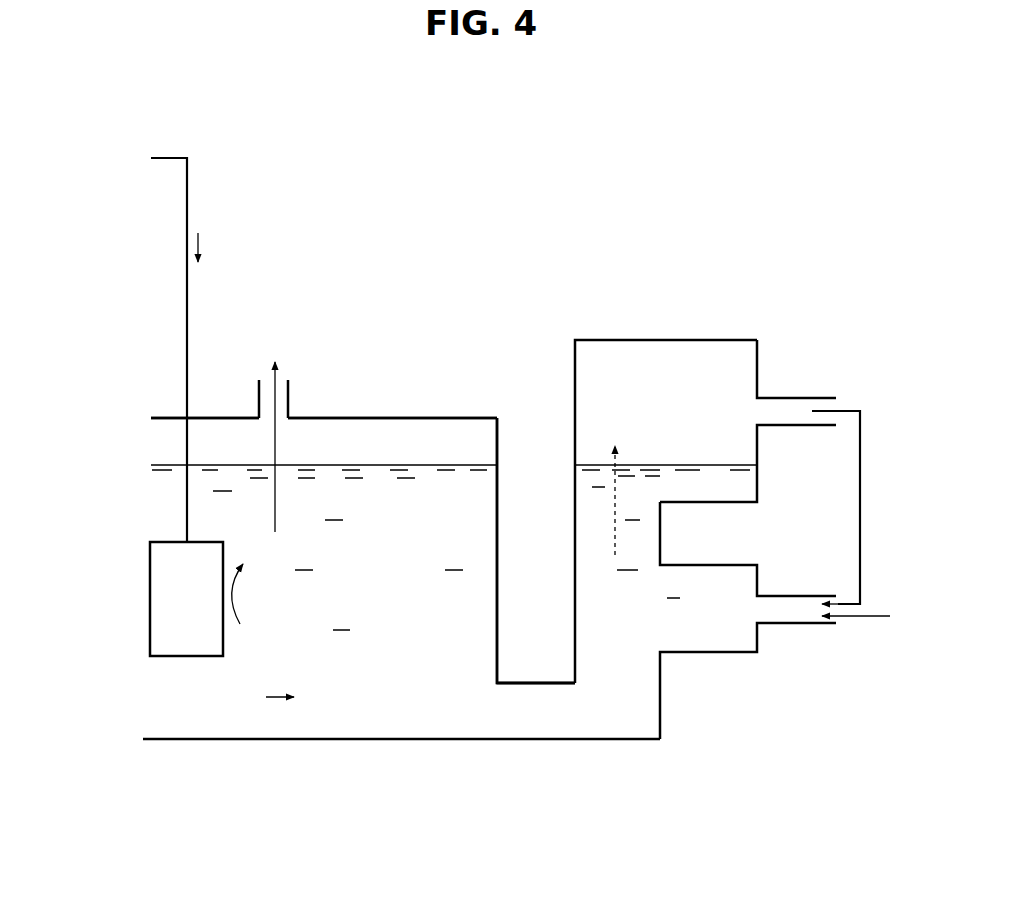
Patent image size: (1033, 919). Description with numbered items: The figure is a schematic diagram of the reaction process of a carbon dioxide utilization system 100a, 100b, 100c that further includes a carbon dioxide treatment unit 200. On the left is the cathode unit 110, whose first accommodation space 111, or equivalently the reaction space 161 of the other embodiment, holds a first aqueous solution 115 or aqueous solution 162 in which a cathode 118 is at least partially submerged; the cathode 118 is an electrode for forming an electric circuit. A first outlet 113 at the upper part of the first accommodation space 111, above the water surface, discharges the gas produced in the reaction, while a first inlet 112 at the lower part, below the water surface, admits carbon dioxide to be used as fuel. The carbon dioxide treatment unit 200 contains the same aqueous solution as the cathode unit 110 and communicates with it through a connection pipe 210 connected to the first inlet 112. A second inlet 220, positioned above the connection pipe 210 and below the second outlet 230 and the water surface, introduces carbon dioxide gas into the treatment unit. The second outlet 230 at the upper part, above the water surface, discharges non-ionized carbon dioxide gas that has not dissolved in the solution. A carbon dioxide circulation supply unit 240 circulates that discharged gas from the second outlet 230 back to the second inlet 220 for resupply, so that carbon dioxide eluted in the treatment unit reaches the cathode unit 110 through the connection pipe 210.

The carbon dioxide utilization system 100a is at (540, 160).
The carbon dioxide utilization system 100b is at (489, 487).
The carbon dioxide utilization system 100c is at (489, 487).
The cathode unit 110 is at (270, 765).
The first accommodation space 111 is at (382, 432).
The reaction space 161 is at (324, 380).
The first inlet 112 is at (498, 697).
The first outlet 113 is at (278, 420).
The first aqueous solution 115 is at (450, 513).
The aqueous solution 162 is at (520, 514).
The cathode 118 is at (162, 621).
The carbon dioxide treatment unit 200 is at (690, 312).
The connection pipe 210 is at (572, 708).
The second inlet 220 is at (758, 610).
The second outlet 230 is at (757, 412).
The carbon dioxide circulation supply unit 240 is at (862, 477).